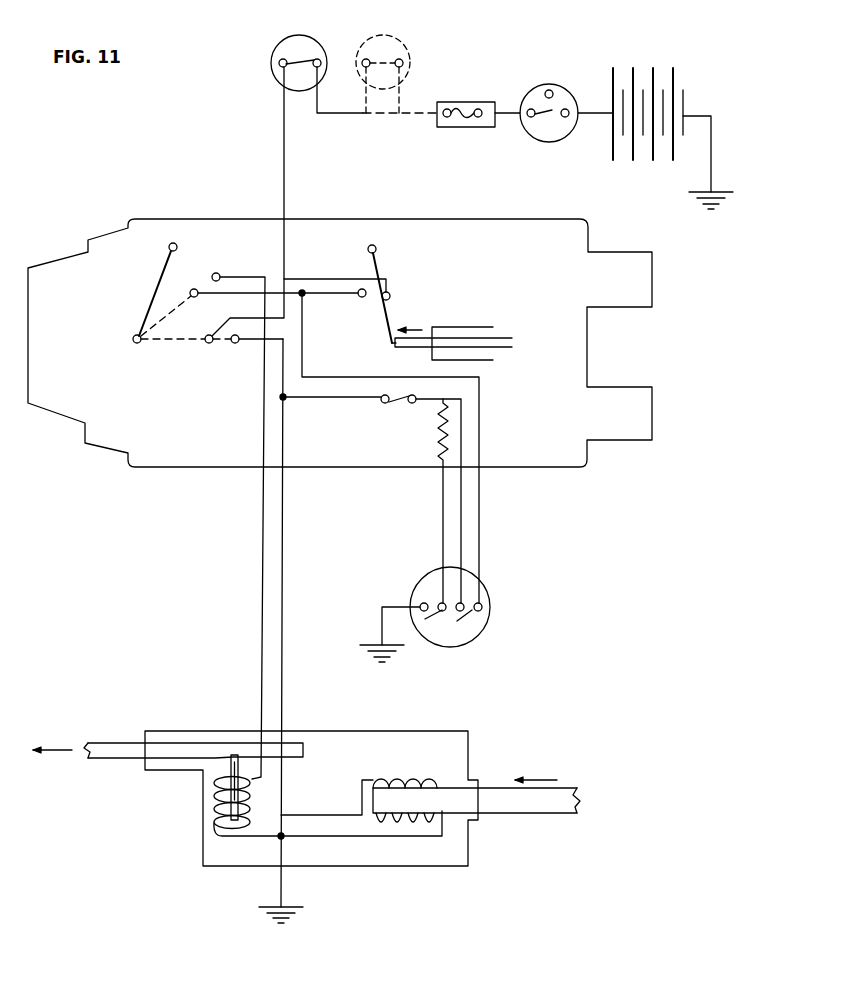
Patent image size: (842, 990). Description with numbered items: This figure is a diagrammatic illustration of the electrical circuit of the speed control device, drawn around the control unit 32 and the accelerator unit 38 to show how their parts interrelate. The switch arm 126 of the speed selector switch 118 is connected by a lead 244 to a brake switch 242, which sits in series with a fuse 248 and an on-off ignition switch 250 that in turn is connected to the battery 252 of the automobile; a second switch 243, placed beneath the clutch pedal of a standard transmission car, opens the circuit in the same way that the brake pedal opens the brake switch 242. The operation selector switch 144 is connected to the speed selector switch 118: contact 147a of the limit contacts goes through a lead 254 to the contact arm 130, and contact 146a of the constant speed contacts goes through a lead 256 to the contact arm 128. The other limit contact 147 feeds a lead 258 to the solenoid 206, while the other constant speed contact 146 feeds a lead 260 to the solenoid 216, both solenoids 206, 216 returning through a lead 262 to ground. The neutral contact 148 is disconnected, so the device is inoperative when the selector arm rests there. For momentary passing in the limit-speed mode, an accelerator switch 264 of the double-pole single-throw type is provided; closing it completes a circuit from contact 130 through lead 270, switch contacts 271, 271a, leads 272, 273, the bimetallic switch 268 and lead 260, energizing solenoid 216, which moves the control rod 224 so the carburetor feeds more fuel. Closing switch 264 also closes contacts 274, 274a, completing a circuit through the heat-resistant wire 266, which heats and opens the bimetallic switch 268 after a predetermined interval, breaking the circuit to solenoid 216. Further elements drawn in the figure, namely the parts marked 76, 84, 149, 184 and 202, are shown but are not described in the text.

The control unit 32 is at (211, 200).
The accelerator unit 38 is at (195, 883).
The stop bracket 76 is at (458, 328).
The actuating rod 84 is at (486, 343).
The speed selector switch 118 is at (390, 268).
The switch arm 126 is at (390, 330).
The contact arm 128 is at (389, 293).
The contact arm 130 is at (359, 297).
The operation selector switch 144 is at (155, 350).
The contact 146 is at (236, 344).
The contact 146a is at (208, 344).
The contact 147 is at (215, 273).
The contact 147a is at (193, 297).
The neutral contact 148 is at (172, 243).
The switch arm 149 is at (156, 282).
The push rod 184 is at (105, 742).
The plunger 202 is at (214, 782).
The solenoid 206 is at (213, 806).
The solenoid 216 is at (396, 782).
The control rod 224 is at (570, 790).
The brake switch 242 is at (300, 45).
The second switch 243 is at (408, 50).
The lead 244 is at (290, 186).
The fuse 248 is at (462, 101).
The on-off ignition switch 250 is at (560, 92).
The battery 252 is at (655, 68).
The lead 254 is at (241, 292).
The lead 256 is at (325, 279).
The lead 258 is at (263, 510).
The lead 260 is at (287, 583).
The lead 262 is at (284, 884).
The accelerator switch 264 is at (482, 595).
The heat-resistant wire 266 is at (440, 440).
The bimetallic switch 268 is at (398, 403).
The lead 270 is at (485, 428).
The switch contact 271 is at (483, 606).
The switch contact 271a is at (467, 616).
The lead 272 is at (463, 515).
The lead 273 is at (325, 400).
The contact 274 is at (420, 602).
The contact 274a is at (439, 619).